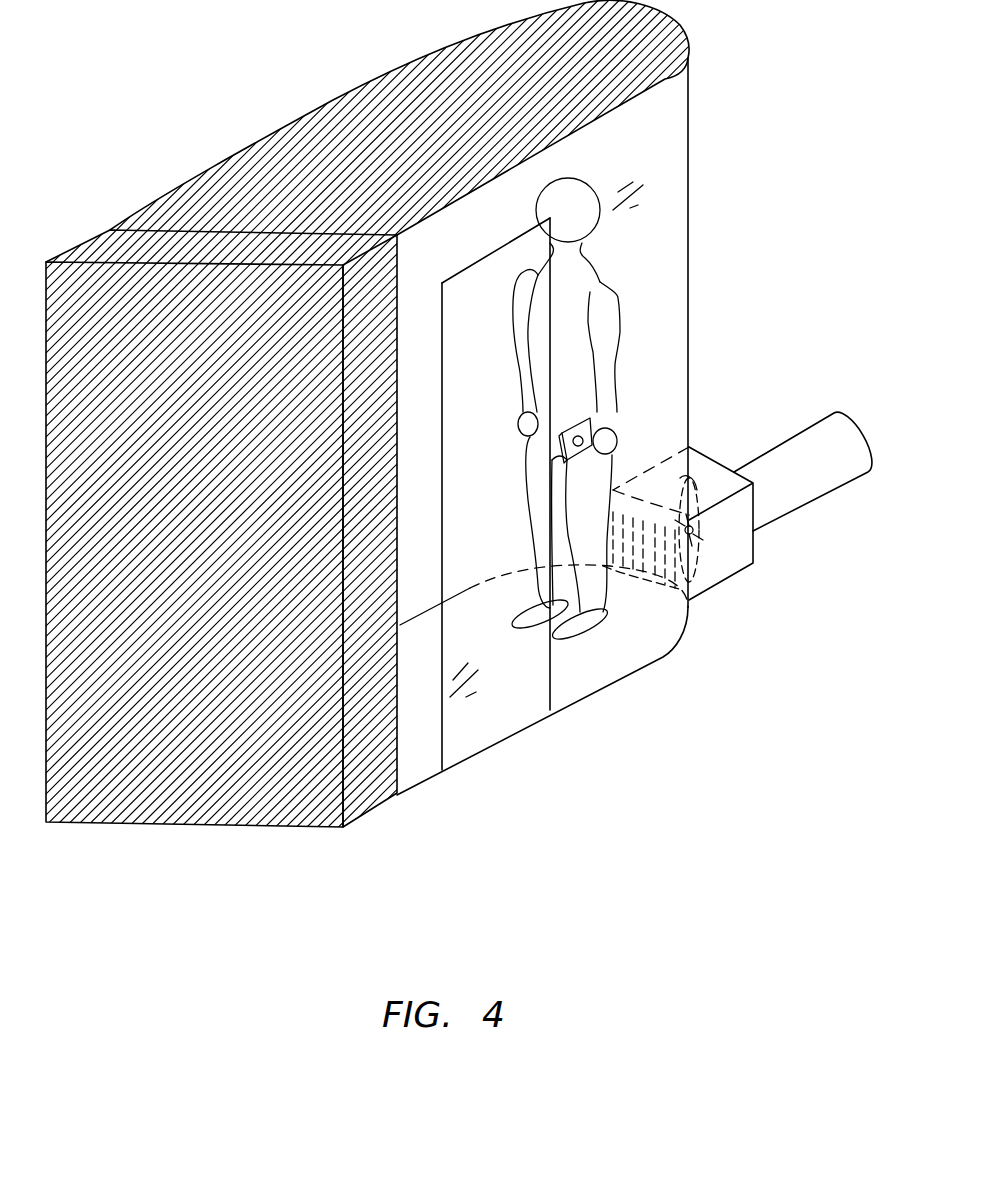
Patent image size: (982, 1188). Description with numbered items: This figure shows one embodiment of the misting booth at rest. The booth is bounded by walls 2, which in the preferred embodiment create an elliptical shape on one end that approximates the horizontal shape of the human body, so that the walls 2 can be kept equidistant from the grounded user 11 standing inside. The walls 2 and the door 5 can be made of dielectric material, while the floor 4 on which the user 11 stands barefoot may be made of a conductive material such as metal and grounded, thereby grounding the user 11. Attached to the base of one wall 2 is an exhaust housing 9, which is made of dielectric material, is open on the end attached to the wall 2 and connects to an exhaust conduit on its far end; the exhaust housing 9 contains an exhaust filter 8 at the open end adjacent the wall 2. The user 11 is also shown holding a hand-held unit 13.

The walls 2 is at (673, 268).
The floor 4 is at (583, 678).
The door 5 is at (450, 582).
The exhaust filter 8 is at (694, 587).
The exhaust housing 9 is at (708, 467).
The user 11 is at (589, 200).
The hand-held unit 13 is at (588, 430).